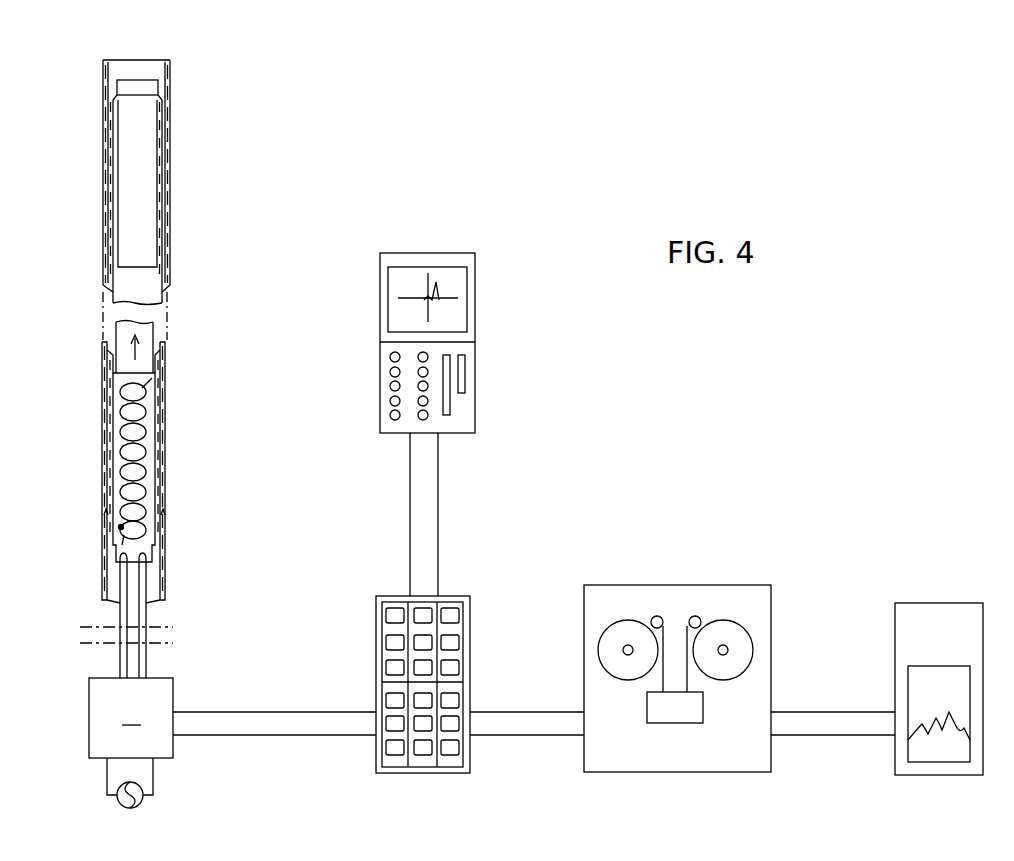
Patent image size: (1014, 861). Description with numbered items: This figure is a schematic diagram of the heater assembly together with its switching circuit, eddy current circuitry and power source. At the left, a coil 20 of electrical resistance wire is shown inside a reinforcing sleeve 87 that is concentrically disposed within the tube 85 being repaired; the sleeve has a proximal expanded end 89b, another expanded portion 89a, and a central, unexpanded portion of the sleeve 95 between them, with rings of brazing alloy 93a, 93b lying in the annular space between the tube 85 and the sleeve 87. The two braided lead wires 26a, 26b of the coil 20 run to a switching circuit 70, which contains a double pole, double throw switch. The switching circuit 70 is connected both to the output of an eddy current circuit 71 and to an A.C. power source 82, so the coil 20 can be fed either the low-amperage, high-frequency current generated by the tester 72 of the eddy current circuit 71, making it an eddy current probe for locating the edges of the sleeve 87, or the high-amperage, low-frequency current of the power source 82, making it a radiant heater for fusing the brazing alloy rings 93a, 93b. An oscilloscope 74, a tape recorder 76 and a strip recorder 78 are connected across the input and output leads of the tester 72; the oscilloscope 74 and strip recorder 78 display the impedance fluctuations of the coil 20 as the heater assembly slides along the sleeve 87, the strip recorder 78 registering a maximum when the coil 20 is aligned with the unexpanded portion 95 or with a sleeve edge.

The coil 20 is at (142, 390).
The lead wire 26a is at (122, 580).
The lead wire 26b is at (152, 583).
The switching circuit 70 is at (131, 718).
The eddy current circuit 71 is at (530, 508).
The tester 72 is at (390, 638).
The oscilloscope 74 is at (475, 337).
The tape recorder 76 is at (677, 590).
The strip recorder 78 is at (942, 610).
The A.C. power source 82 is at (117, 802).
The tube 85 is at (170, 80).
The reinforcing sleeve 87 is at (162, 95).
The expanded portion of the sleeve 89a is at (158, 442).
The proximal expanded end of the sleeve 89b is at (162, 187).
The ring of brazing alloy 93a is at (162, 510).
The ring of brazing alloy 93b is at (110, 125).
The central unexpanded portion of the sleeve 95 is at (118, 332).